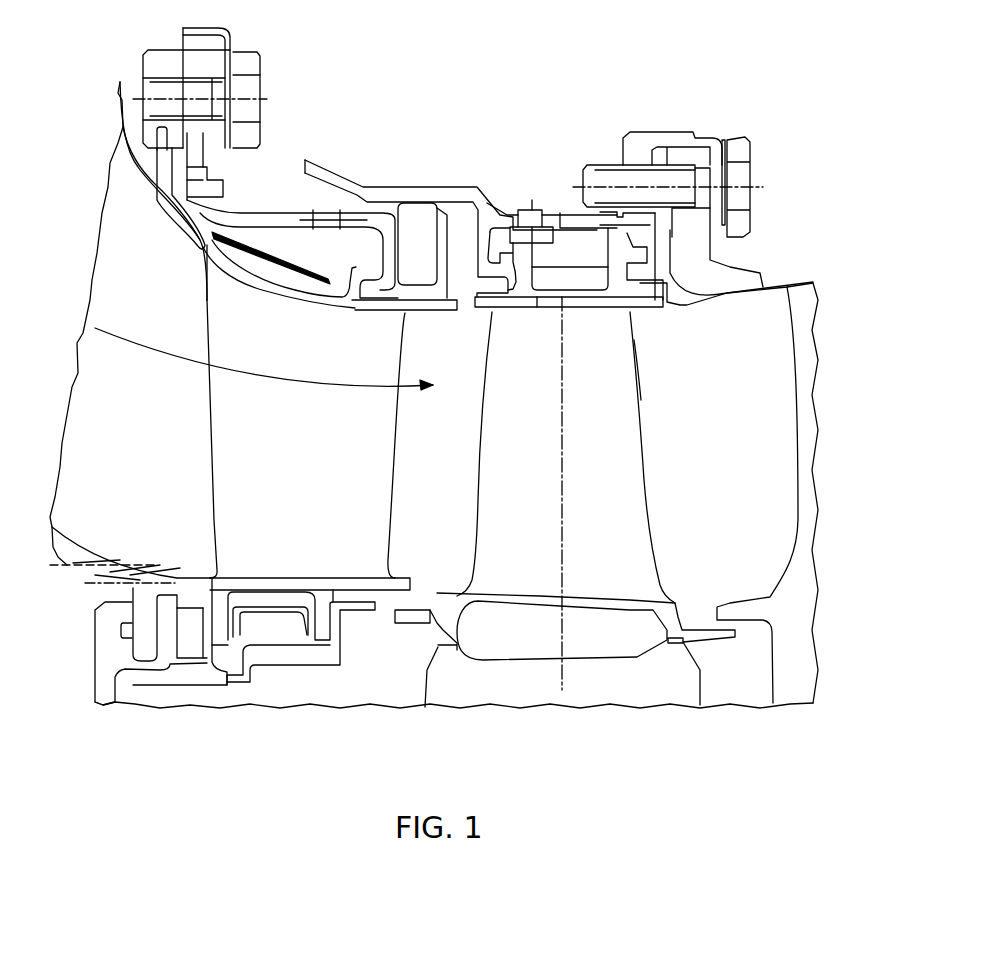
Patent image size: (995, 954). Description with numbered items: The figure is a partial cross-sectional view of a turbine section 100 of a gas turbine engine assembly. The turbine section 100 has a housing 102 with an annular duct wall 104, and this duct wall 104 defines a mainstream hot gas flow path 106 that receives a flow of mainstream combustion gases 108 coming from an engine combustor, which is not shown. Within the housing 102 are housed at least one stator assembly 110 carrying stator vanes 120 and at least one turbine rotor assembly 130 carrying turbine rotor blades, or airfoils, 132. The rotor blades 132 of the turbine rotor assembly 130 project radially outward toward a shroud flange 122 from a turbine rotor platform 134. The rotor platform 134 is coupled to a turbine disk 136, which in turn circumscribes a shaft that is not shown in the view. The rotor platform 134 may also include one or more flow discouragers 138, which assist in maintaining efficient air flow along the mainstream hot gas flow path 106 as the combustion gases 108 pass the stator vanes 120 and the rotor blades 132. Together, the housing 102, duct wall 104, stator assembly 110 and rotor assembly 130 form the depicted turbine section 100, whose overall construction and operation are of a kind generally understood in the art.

The turbine section 100 is at (726, 77).
The housing 102 is at (138, 222).
The annular duct wall 104 is at (410, 314).
The mainstream hot gas flow path 106 is at (95, 397).
The mainstream combustion gases 108 is at (285, 372).
The stator assembly 110 is at (210, 518).
The stator vanes 120 is at (380, 530).
The shroud flange 122 is at (540, 300).
The turbine rotor assembly 130 is at (648, 443).
The turbine rotor blades 132 is at (638, 367).
The turbine rotor platform 134 is at (667, 600).
The turbine disk 136 is at (482, 697).
The flow discouragers 138 is at (407, 623).